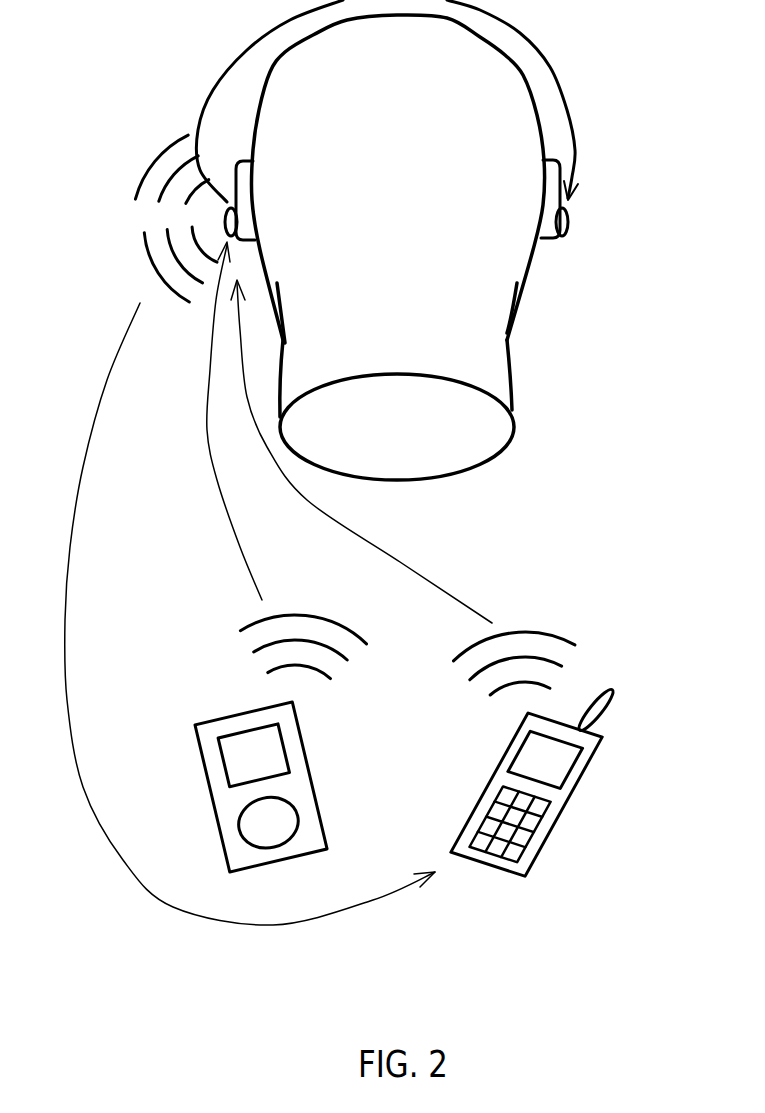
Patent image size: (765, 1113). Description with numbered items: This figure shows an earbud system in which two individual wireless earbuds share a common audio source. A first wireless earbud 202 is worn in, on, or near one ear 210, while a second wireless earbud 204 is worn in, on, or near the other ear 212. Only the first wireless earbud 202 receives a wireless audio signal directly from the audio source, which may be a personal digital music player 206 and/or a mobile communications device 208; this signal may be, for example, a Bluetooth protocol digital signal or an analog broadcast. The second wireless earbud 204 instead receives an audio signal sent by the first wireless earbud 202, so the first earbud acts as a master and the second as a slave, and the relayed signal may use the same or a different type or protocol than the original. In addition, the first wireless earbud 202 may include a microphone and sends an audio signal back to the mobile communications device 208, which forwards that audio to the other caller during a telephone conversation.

The first wireless earbud 202 is at (226, 211).
The second wireless earbud 204 is at (569, 230).
The personal digital music player 206 is at (327, 827).
The mobile communications device 208 is at (536, 857).
The ear 210 is at (241, 159).
The ear 212 is at (542, 239).